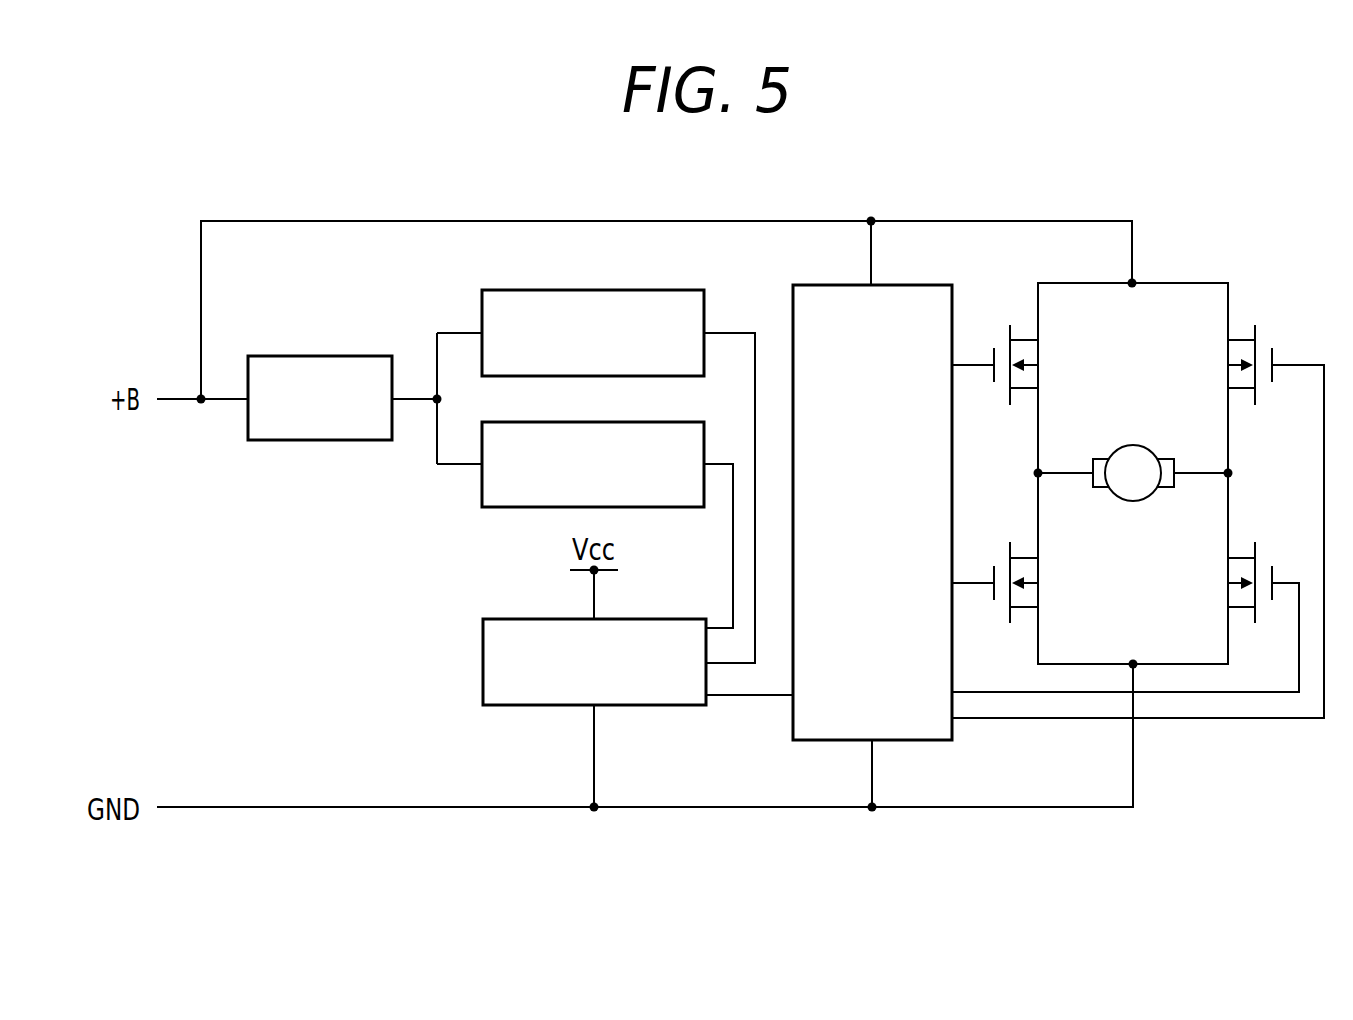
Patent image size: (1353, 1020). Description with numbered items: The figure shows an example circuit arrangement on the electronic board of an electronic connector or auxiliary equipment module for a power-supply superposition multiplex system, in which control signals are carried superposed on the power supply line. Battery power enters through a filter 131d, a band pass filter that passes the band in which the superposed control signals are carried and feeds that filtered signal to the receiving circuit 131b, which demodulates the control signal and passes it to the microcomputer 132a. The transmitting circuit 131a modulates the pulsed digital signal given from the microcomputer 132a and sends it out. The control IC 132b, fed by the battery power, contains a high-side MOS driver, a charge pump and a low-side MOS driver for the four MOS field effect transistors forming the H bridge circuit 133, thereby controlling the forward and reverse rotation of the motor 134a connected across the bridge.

The transmitting circuit 131a is at (645, 290).
The receiving circuit 131b is at (635, 422).
The filter 131d is at (340, 356).
The microcomputer 132a is at (645, 619).
The control IC 132b is at (910, 285).
The H bridge circuit 133 is at (1133, 431).
The motor 134a is at (1174, 428).